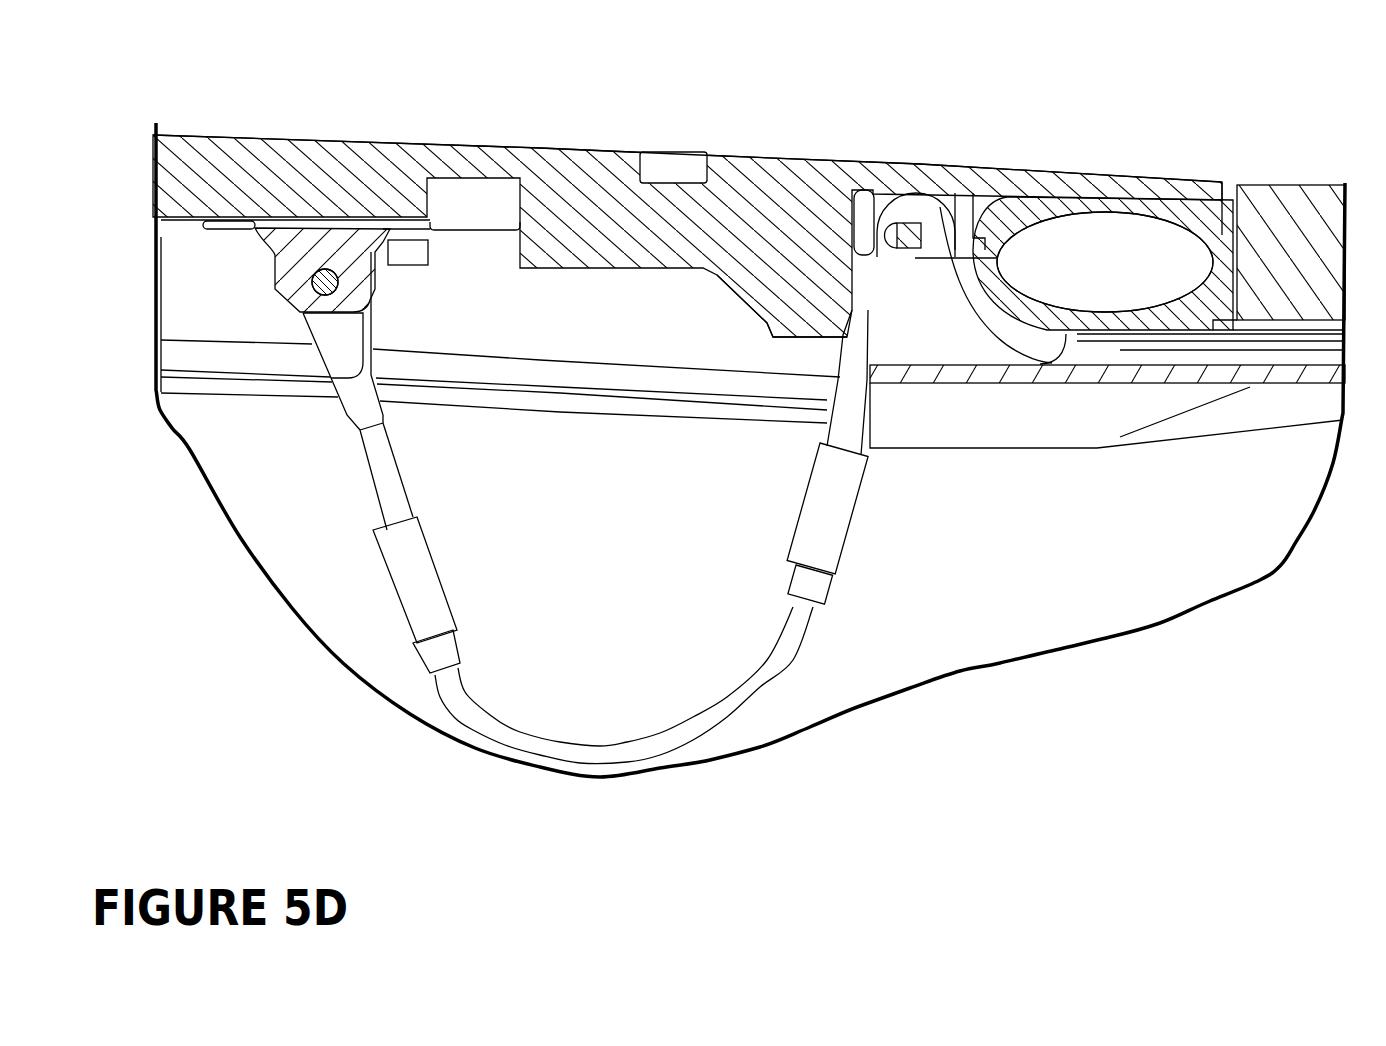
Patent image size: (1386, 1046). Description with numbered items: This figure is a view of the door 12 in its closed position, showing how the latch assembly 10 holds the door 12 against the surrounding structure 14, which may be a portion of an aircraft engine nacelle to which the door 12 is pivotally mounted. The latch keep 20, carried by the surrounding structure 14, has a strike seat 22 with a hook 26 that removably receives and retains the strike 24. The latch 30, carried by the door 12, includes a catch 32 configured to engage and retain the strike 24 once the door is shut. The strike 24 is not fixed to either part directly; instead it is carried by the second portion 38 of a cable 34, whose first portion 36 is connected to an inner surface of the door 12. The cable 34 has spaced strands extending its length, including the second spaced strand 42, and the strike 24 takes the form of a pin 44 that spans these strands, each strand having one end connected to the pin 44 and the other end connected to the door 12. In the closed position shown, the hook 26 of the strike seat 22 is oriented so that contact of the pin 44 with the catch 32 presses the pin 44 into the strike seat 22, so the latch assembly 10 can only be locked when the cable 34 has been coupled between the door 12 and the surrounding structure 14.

The latch assembly 10 is at (881, 172).
The door 12 is at (180, 230).
The surrounding structure 14 is at (1311, 400).
The latch keep 20 is at (1012, 392).
The strike seat 22 is at (965, 214).
The strike 24 is at (933, 212).
The hook 26 is at (861, 190).
The latch 30 is at (769, 345).
The catch 32 is at (982, 262).
The cable 34 is at (356, 472).
The first portion 36 is at (337, 340).
The second portion 38 is at (740, 154).
The second spaced strand 42 is at (843, 477).
The pin 44 is at (913, 223).